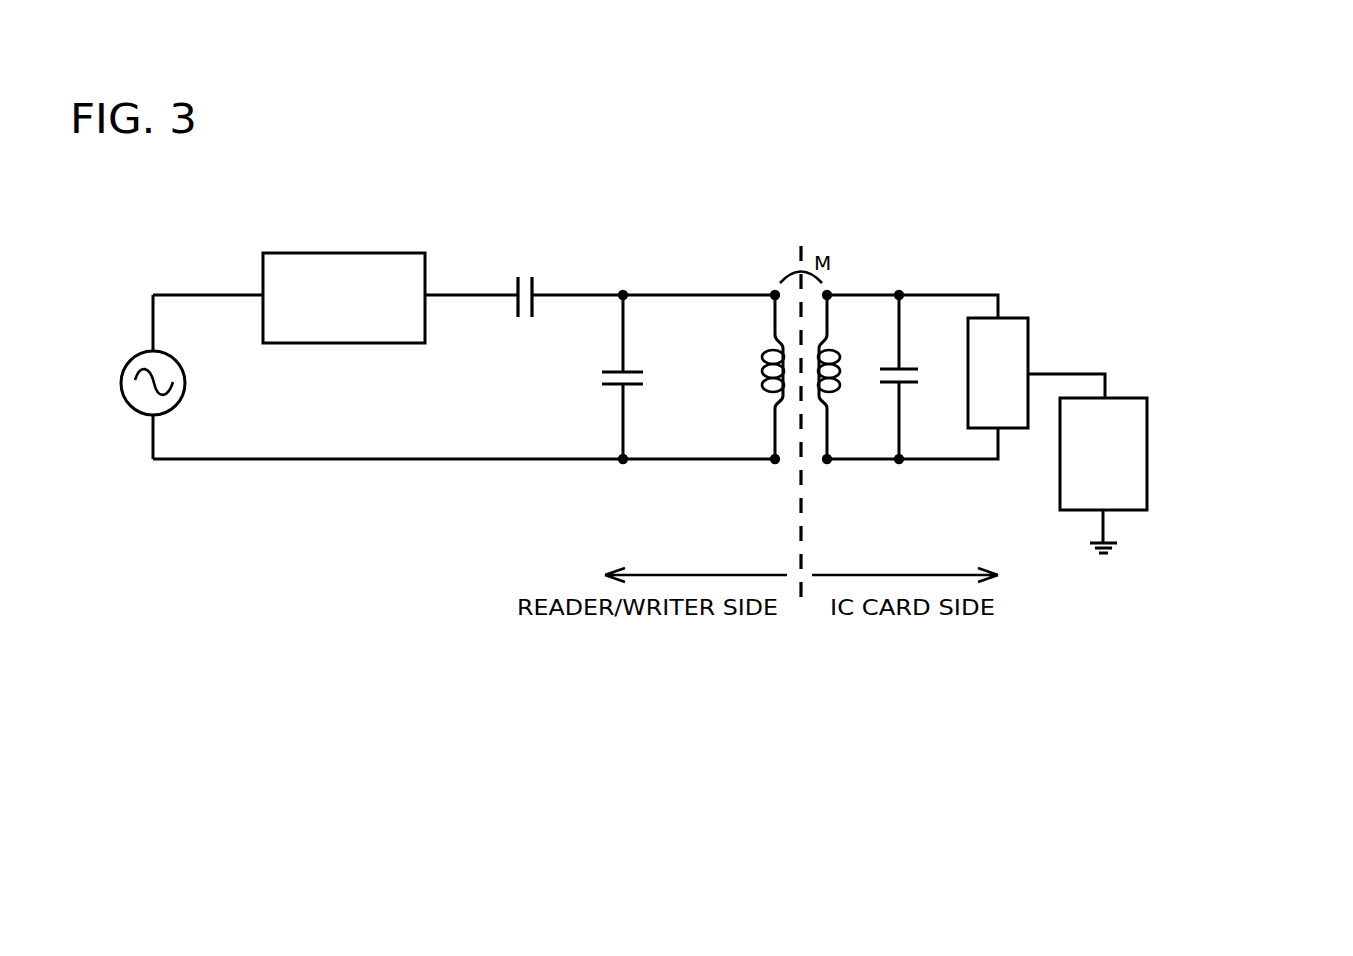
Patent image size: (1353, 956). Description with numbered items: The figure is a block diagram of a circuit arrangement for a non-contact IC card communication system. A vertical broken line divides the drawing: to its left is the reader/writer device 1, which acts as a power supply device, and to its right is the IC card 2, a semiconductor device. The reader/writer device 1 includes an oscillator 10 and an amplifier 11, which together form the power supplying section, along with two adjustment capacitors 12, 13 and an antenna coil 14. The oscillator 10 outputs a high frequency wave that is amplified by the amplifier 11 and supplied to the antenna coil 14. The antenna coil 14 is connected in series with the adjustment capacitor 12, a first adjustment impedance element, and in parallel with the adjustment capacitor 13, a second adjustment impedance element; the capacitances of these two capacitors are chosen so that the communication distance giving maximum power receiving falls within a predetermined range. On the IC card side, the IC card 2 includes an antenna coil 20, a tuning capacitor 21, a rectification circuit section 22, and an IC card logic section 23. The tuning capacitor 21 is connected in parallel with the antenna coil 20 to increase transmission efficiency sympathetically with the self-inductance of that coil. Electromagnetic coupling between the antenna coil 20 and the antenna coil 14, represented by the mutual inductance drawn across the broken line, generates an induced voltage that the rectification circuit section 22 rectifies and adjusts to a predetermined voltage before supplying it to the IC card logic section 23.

The reader/writer device 1 is at (543, 202).
The IC card 2 is at (993, 200).
The oscillator 10 is at (187, 378).
The amplifier 11 is at (362, 253).
The adjustment capacitor 12 is at (533, 310).
The adjustment capacitor 13 is at (635, 372).
The antenna coil 14 is at (763, 362).
The antenna coil 20 is at (835, 362).
The tuning capacitor 21 is at (912, 369).
The rectification circuit section 22 is at (1022, 318).
The IC card logic section 23 is at (1123, 397).